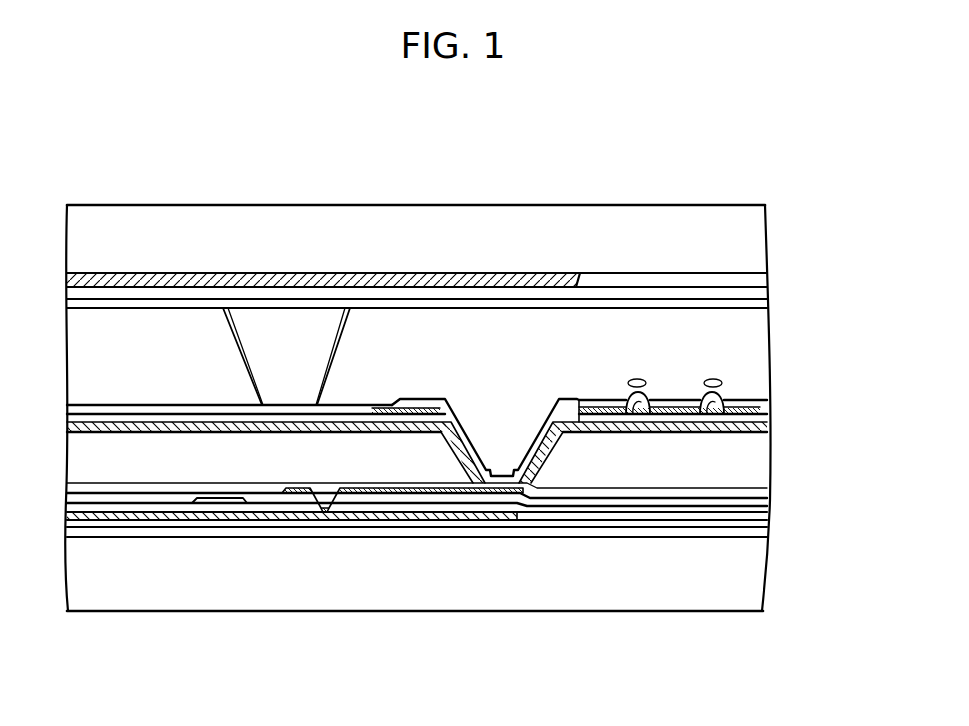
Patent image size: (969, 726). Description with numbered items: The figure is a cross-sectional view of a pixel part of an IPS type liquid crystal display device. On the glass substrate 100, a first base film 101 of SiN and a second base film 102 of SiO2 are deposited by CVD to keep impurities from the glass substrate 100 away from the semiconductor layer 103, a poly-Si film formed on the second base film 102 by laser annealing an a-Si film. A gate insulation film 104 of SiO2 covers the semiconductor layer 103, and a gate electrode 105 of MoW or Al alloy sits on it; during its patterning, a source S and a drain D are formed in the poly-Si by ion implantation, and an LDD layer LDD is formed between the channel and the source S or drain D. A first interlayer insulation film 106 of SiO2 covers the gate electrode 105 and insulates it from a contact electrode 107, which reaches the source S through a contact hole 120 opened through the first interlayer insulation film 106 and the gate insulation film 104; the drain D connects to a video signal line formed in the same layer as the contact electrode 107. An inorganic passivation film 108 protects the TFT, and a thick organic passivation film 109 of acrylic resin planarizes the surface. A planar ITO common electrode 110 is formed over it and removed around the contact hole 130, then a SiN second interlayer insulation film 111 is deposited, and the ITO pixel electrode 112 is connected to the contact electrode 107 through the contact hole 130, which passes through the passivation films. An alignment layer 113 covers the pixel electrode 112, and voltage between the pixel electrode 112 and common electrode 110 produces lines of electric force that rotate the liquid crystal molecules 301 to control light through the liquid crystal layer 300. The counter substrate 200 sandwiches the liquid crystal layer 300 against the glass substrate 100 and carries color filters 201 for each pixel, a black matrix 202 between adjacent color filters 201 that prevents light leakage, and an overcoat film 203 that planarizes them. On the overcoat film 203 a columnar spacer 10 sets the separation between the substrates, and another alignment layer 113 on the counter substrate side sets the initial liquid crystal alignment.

The glass substrate 100 is at (753, 575).
The first base film 101 is at (483, 532).
The second base film 102 is at (537, 522).
The semiconductor layer 103 is at (207, 519).
The gate insulation film 104 is at (595, 518).
The gate electrode 105 is at (223, 505).
The first interlayer insulation film 106 is at (653, 508).
The contact electrode 107 is at (410, 490).
The inorganic passivation film 108 is at (712, 496).
The organic passivation film 109 is at (753, 461).
The common electrode 110 is at (203, 423).
The second interlayer insulation film 111 is at (363, 420).
The pixel electrode 112 is at (425, 413).
The alignment layer 113 is at (522, 308).
The contact hole 120 is at (322, 490).
The contact hole 130 is at (503, 458).
The counter substrate 200 is at (753, 243).
The color filter 201 is at (647, 273).
The black matrix 202 is at (400, 273).
The overcoat film 203 is at (753, 293).
The liquid crystal layer 300 is at (753, 351).
The liquid crystal molecules 301 is at (713, 378).
The columnar spacer 10 is at (260, 342).
The drain D is at (117, 519).
The source S is at (313, 519).
The LDD layer LDD is at (187, 519).